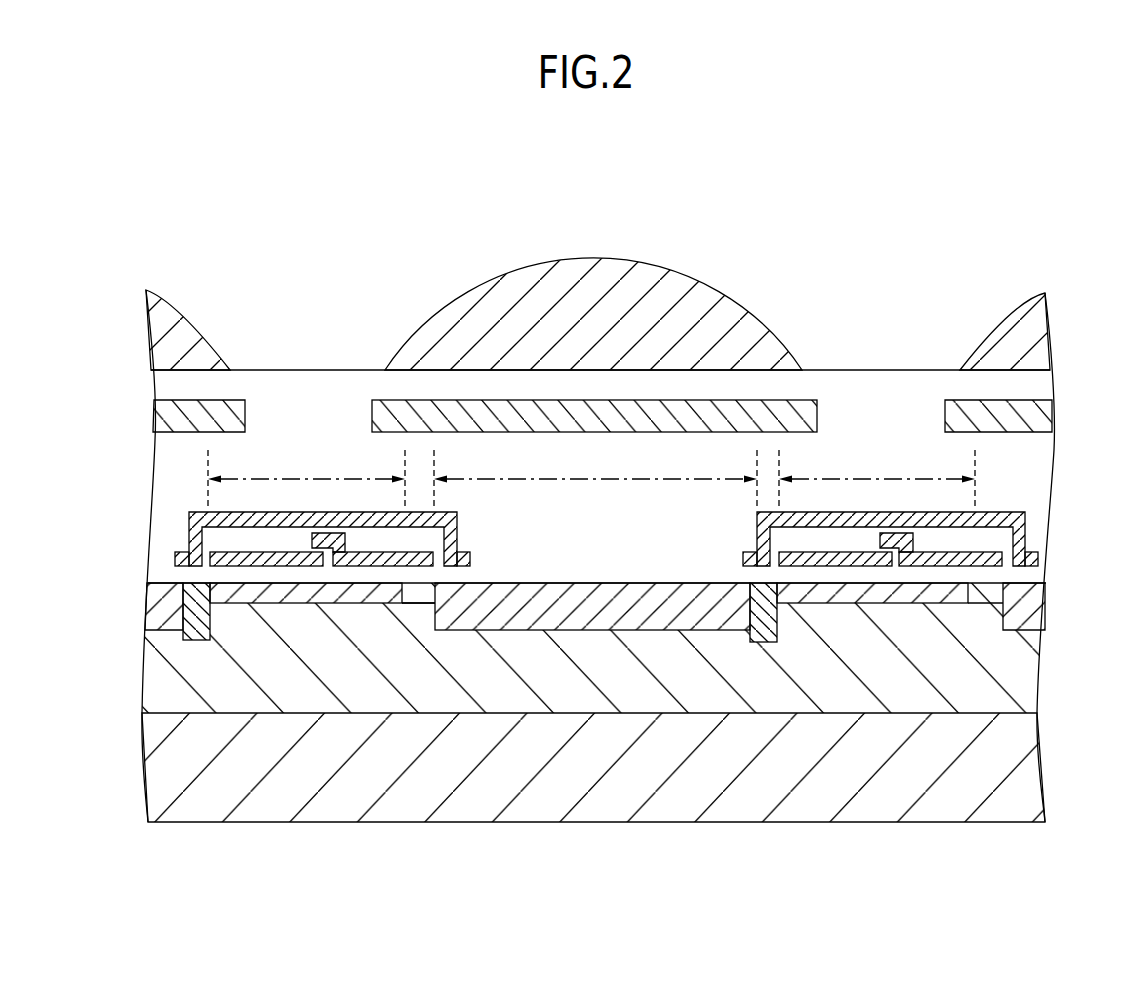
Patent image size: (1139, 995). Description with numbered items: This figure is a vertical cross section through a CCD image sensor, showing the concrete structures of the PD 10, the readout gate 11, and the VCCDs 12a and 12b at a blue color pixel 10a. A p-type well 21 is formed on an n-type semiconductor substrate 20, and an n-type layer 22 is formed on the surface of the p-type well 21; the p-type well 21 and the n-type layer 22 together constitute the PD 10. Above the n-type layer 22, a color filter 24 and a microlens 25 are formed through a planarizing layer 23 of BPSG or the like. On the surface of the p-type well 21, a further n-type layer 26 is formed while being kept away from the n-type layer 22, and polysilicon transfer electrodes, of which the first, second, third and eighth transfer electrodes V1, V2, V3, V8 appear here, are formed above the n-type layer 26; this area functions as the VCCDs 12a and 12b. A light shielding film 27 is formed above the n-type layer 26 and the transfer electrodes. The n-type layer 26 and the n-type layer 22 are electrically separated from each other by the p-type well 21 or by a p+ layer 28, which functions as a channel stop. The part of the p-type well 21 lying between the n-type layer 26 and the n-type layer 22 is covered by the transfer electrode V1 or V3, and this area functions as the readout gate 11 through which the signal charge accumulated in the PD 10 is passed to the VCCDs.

The blue color pixel 10a is at (741, 241).
The PD 10 is at (536, 479).
The readout gate 11 is at (405, 627).
The VCCD 12a is at (240, 479).
The VCCD 12b is at (808, 479).
The n-type semiconductor substrate 20 is at (602, 808).
The p-type well 21 is at (1025, 677).
The n-type layer 22 is at (152, 605).
The planarizing layer 23 is at (178, 456).
The color filter 24 is at (817, 415).
The microlens 25 is at (572, 277).
The n-type layer 26 is at (297, 592).
The light shielding film 27 is at (207, 511).
The p+ layer 28 is at (195, 642).
The first transfer electrode V1 is at (457, 537).
The second transfer electrode V2 is at (755, 537).
The third transfer electrode V3 is at (1006, 553).
The eighth transfer electrode V8 is at (223, 552).